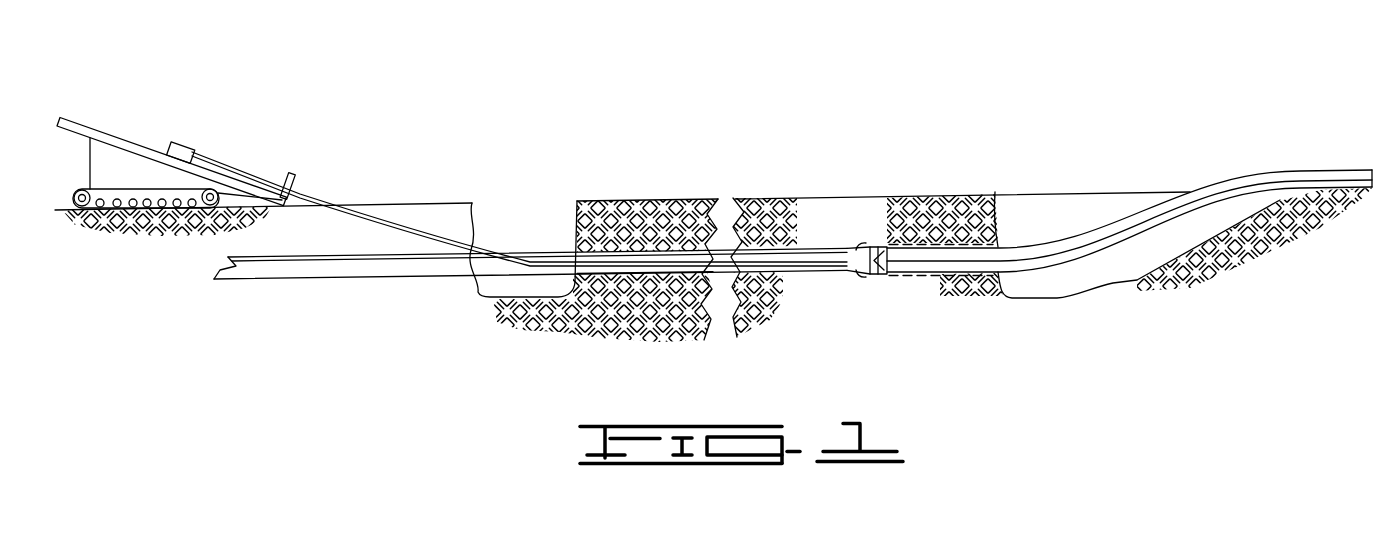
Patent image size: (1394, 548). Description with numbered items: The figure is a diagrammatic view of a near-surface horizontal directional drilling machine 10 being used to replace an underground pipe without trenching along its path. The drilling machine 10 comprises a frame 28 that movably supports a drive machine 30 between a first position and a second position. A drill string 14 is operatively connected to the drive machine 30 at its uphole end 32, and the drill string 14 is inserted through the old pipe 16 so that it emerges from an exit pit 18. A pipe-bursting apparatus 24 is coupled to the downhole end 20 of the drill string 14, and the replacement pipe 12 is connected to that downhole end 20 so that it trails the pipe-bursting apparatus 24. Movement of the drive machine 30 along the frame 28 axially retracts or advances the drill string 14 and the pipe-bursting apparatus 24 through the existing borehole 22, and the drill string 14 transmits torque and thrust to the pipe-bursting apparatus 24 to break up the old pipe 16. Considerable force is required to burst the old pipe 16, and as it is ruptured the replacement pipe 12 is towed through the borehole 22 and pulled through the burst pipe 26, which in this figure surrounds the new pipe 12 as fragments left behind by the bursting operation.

The horizontal directional drilling machine 10 is at (207, 132).
The replacement pipe 12 is at (1236, 172).
The drill string 14 is at (510, 257).
The old pipe 16 is at (658, 281).
The exit pit 18 is at (1071, 298).
The downhole end 20 is at (788, 262).
The existing borehole 22 is at (623, 281).
The pipe-bursting apparatus 24 is at (867, 245).
The burst pipe 26 is at (913, 274).
The frame 28 is at (100, 130).
The drive machine 30 is at (170, 142).
The uphole end 32 is at (254, 176).